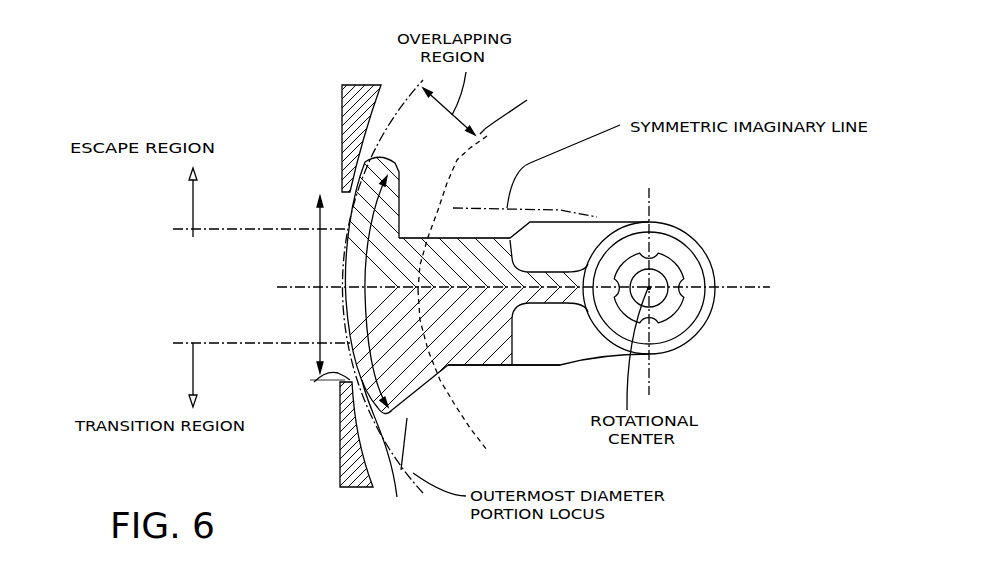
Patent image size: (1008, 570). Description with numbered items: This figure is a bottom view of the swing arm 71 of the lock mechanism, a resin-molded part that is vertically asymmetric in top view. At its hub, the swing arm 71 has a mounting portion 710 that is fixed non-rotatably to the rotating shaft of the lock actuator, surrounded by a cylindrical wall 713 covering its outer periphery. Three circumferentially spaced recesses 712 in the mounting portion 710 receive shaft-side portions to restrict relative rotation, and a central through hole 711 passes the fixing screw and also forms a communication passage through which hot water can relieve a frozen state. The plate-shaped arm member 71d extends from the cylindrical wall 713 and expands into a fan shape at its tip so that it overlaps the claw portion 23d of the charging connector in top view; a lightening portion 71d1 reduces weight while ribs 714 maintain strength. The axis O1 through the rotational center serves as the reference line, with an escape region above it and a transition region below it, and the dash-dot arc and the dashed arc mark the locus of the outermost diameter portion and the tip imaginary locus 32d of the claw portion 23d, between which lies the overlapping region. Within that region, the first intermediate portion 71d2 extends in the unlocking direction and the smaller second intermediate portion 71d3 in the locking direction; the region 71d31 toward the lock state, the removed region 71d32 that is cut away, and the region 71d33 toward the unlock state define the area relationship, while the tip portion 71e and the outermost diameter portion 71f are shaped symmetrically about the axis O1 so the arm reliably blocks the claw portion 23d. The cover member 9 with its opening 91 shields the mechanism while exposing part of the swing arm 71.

The cover member 9 is at (333, 461).
The opening 91 is at (340, 376).
The claw portion 23d is at (276, 245).
The tip of claw portion 32d is at (619, 248).
The swing arm 71 is at (580, 203).
The arm member 71d is at (457, 375).
The lightening portion 71d1 is at (527, 347).
The first intermediate portion 71d2 is at (482, 350).
The second intermediate portion 71d3 is at (490, 255).
The region in the rotational direction to the lock state 71d31 is at (350, 252).
The removed region 71d32 is at (478, 138).
The region in the rotational direction to the unlock state 71d33 is at (392, 451).
The tip portion of claw 71e is at (393, 168).
The outermost diameter portion 71f is at (345, 303).
The mounting portion 710 is at (677, 315).
The through hole 711 is at (657, 305).
The recesses 712 is at (670, 267).
The cylindrical wall 713 is at (703, 250).
The ribs 714 is at (557, 308).
The axis O1 is at (758, 284).